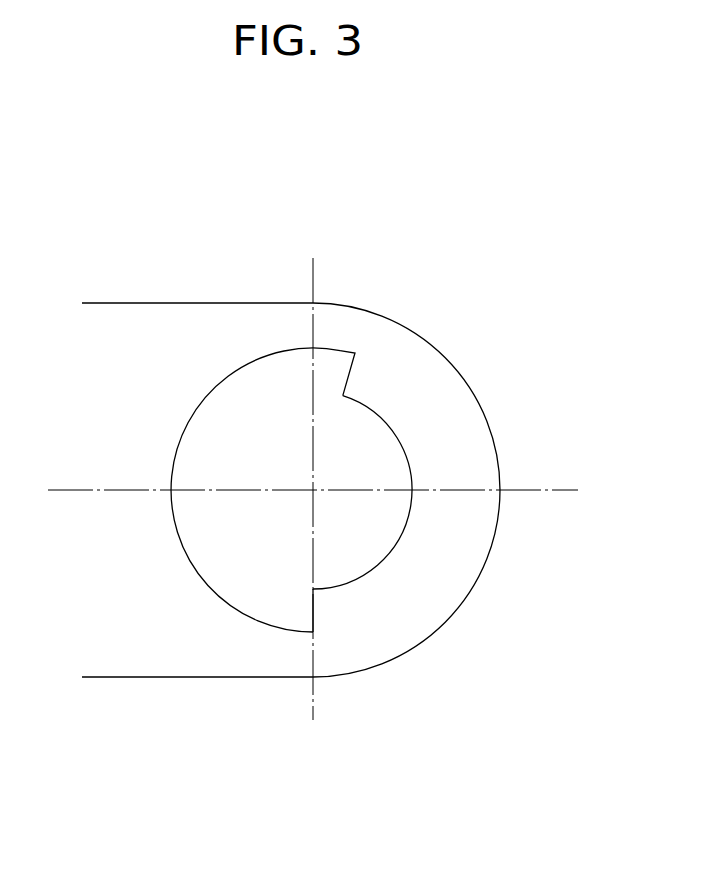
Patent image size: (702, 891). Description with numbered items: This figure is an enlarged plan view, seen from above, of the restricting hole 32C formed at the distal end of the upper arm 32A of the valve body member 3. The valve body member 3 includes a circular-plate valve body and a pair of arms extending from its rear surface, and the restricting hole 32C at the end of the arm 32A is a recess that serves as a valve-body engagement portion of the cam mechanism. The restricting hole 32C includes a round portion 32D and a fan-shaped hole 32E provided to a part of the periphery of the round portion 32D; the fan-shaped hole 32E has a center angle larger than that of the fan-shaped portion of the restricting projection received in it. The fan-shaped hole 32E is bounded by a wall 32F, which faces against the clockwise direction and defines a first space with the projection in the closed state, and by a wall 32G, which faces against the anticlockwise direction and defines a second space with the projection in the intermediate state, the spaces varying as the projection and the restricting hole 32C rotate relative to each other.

The valve body member 3 is at (313, 458).
The upper arm 32A is at (142, 302).
The restricting hole 32C is at (369, 510).
The round portion 32D is at (363, 565).
The fan-shaped hole 32E is at (255, 620).
The wall of the fan-shaped hole 32F is at (313, 612).
The wall of the fan-shaped hole 32G is at (348, 372).